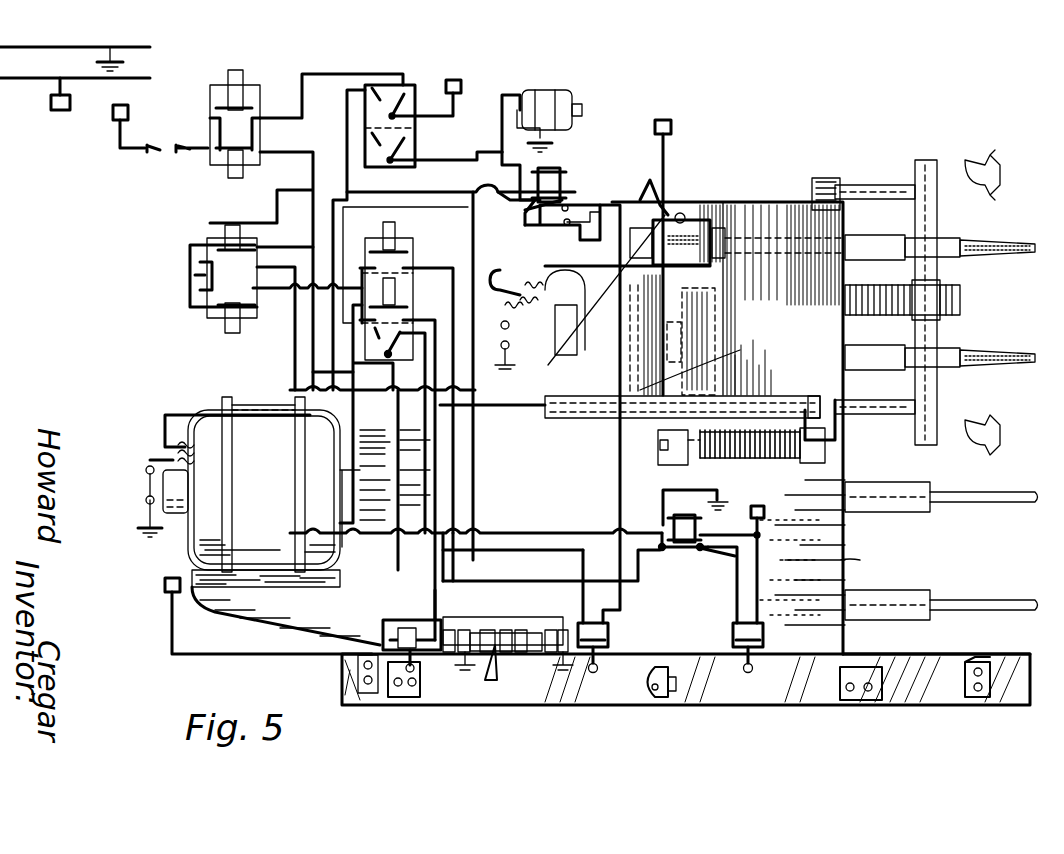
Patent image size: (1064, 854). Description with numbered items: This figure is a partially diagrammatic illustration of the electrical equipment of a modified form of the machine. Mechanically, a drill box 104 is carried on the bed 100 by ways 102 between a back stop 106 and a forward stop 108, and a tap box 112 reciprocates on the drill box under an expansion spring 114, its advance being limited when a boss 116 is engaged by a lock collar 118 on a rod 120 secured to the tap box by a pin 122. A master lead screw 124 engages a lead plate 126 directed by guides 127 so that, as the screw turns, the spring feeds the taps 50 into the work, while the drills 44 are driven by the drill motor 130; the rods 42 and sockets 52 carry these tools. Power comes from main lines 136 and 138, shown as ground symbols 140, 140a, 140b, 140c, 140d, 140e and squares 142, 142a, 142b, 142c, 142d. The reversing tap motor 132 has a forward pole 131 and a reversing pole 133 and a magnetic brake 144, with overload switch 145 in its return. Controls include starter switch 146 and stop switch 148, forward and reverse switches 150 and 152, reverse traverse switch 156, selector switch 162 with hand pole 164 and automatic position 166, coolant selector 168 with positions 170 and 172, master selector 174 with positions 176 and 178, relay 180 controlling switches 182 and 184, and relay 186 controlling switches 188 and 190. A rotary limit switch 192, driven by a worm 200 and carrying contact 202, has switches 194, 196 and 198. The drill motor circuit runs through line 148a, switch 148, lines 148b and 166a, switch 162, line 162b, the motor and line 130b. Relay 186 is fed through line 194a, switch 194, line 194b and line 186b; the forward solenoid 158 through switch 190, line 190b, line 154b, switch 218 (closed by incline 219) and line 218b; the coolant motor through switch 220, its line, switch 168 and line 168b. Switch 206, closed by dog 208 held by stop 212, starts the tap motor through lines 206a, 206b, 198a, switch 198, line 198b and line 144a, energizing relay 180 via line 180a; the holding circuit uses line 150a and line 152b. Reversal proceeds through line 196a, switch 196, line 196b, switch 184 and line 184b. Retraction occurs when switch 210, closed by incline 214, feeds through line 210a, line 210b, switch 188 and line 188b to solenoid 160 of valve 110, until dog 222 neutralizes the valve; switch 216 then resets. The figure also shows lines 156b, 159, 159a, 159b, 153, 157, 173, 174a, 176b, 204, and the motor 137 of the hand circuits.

The rod 42 is at (900, 515).
The drills 44 is at (1000, 590).
The taps 50 is at (1010, 240).
The lamp socket 52 is at (950, 238).
The bed 100 is at (960, 705).
The ways 102 is at (920, 654).
The drill box 104 is at (845, 560).
The back stop 106 is at (358, 667).
The forward stop 108 is at (995, 645).
The control valve 110 is at (525, 651).
The tap box 112 is at (845, 205).
The expansion spring 114 is at (812, 463).
The boss 116 is at (750, 457).
The lock collar 118 is at (676, 410).
The rod 120 is at (806, 418).
The pin 122 is at (815, 415).
The master lead screw 124 is at (960, 300).
The lead plate 126 is at (925, 160).
The guides 127 is at (860, 185).
The drill motor 130 is at (195, 545).
The line 130b is at (160, 452).
The forward pole 131 is at (430, 312).
The reversing tap motor 132 is at (715, 296).
The reversing pole 133 is at (400, 262).
The main power line 136 is at (150, 47).
The motor 137 is at (552, 90).
The main power line 138 is at (150, 78).
The ground symbol 140 is at (122, 66).
The terminal 140a is at (728, 500).
The terminal 140b is at (570, 672).
The terminal 140c is at (552, 146).
The terminal 140d is at (480, 400).
The terminal 140e is at (440, 672).
The square 142 is at (60, 110).
The terminal 142a is at (670, 125).
The terminal 142b is at (765, 512).
The terminal 142c is at (165, 585).
The terminal 142d is at (455, 80).
The magnetic brake 144 is at (681, 322).
The line 144a is at (540, 282).
The overload switch 145 is at (577, 340).
The starter switch 146 is at (218, 112).
The stop switch 148 is at (230, 140).
The line 148a is at (180, 152).
The line 148b is at (300, 170).
The forward switch 150 is at (222, 240).
The line 150a is at (285, 237).
The reverse switch 152 is at (195, 300).
The line 152b is at (420, 186).
The armature 153 is at (205, 290).
The line 154b is at (392, 480).
The reverse switch 156 is at (440, 262).
The wire 156b is at (452, 460).
The relay 157 is at (395, 245).
The forward solenoid 158 is at (545, 620).
The wire 159 is at (262, 270).
The wire 159a is at (235, 240).
The wire 159b is at (290, 320).
The reverse solenoid 160 is at (465, 652).
The manual selector switch 162 is at (386, 355).
The line 162b is at (380, 400).
The hand position 164 is at (374, 336).
The automatic position 166 is at (372, 378).
The line 166a is at (290, 355).
The manual selector switch 168 is at (395, 150).
The line 168b is at (470, 165).
The hand position 170 is at (372, 136).
The automatic position 172 is at (402, 130).
The switch 173 is at (150, 152).
The master selector switch 174 is at (400, 100).
The wire 174a is at (445, 110).
The hand position 176 is at (380, 90).
The switch housing 176b is at (350, 100).
The automatic position 178 is at (382, 96).
The relay 180 is at (582, 172).
The line 180a is at (607, 237).
The switch 182 is at (560, 200).
The switch 184 is at (575, 215).
The line 184b is at (520, 210).
The relay 186 is at (672, 522).
The line 186b is at (665, 487).
The switch 188 is at (563, 577).
The line 188b is at (500, 581).
The switch 190 is at (690, 575).
The line 190b is at (470, 525).
The rotary limit switch 192 is at (712, 228).
The first switch 194 is at (672, 205).
The line 194a is at (665, 150).
The line 194b is at (712, 335).
The second switch 196 is at (682, 213).
The line 196a is at (515, 178).
The line 196b is at (550, 243).
The third switch 198 is at (728, 232).
The line 198a is at (668, 175).
The line 198b is at (606, 290).
The worm 200 is at (735, 245).
The contact 202 is at (668, 240).
The sleeve 204 is at (652, 270).
The switch 206 is at (610, 630).
The line 206a is at (290, 388).
The line 206b is at (665, 455).
The one-way dog 208 is at (668, 674).
The switch 210 is at (765, 635).
The line 210a is at (757, 570).
The line 210b is at (737, 595).
The stop 212 is at (676, 686).
The incline 214 is at (840, 672).
The two-position two-circuit switch 216 is at (395, 625).
The switch 218 is at (438, 605).
The line 218b is at (530, 617).
The incline 219 is at (405, 697).
The switch 220 is at (455, 640).
The dog 222 is at (497, 680).